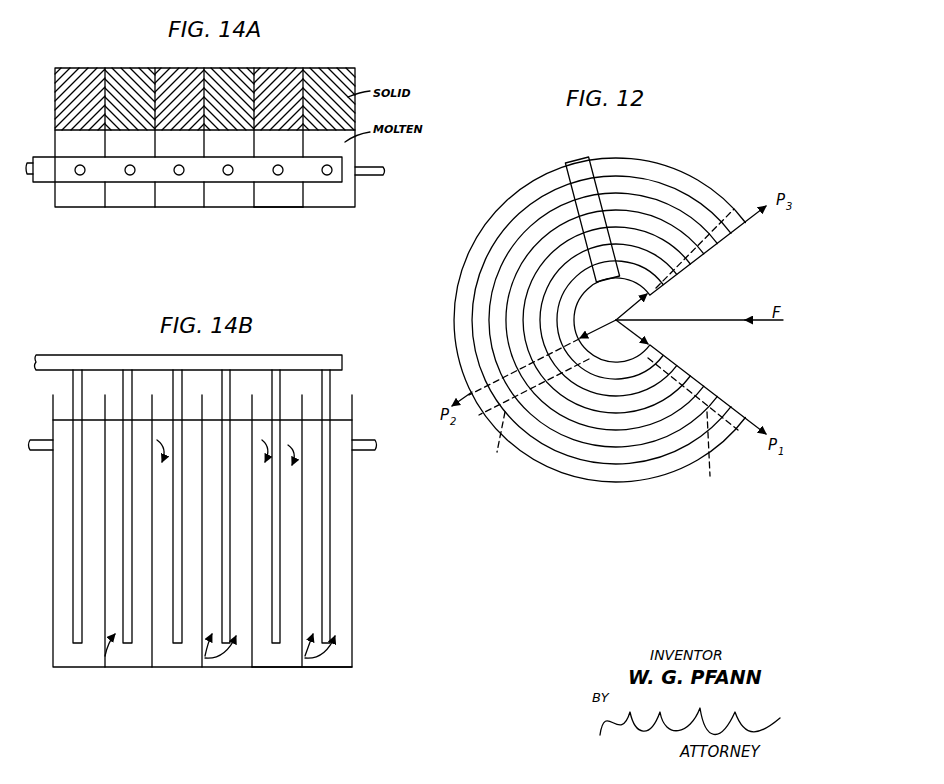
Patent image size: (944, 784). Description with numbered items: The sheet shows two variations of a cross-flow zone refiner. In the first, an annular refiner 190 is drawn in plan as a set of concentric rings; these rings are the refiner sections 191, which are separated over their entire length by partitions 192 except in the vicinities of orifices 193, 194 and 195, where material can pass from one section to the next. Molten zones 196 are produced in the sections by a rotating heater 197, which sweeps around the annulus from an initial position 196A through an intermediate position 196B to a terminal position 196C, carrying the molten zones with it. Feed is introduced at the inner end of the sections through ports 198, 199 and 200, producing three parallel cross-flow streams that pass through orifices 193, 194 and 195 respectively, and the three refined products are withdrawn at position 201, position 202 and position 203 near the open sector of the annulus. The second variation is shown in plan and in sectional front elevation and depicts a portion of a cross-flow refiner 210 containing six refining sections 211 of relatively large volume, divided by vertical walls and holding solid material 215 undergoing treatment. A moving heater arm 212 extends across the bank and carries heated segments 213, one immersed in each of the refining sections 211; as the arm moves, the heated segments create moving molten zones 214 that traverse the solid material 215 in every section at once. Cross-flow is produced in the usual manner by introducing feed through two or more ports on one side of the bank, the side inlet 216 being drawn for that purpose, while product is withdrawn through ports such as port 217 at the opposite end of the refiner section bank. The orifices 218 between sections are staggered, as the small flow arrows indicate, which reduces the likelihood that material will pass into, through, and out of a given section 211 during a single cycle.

In FIG. 12, the refiner 190 is at (722, 193).
In FIG. 12, the refiner sections 191 is at (730, 253).
In FIG. 12, the partitions 192 is at (683, 207).
In FIG. 12, the orifice 193 is at (698, 383).
In FIG. 12, the orifice 194 is at (517, 360).
In FIG. 12, the orifice 195 is at (688, 274).
In FIG. 12, the molten zones 196 is at (597, 217).
In FIG. 12, the initial position 196A is at (748, 413).
In FIG. 12, the intermediate position 196B is at (480, 408).
In FIG. 12, the terminal position 196C is at (757, 229).
In FIG. 12, the rotating heater 197 is at (565, 189).
In FIG. 12, the port 198 is at (648, 343).
In FIG. 12, the port 199 is at (586, 336).
In FIG. 12, the port 200 is at (648, 294).
In FIG. 12, the position 201 is at (746, 428).
In FIG. 12, the position 202 is at (472, 390).
In FIG. 12, the position 203 is at (754, 223).
In FIG. 14A, the cross-flow refiner 210 is at (56, 135).
In FIG. 14B, the cross-flow refiner 210 is at (352, 518).
In FIG. 14A, the refining sections 211 is at (208, 199).
In FIG. 14B, the refining sections 211 is at (315, 660).
In FIG. 14A, the moving heater arm 212 is at (58, 165).
In FIG. 14B, the moving heater arm 212 is at (337, 360).
In FIG. 14A, the heated segments 213 is at (128, 175).
In FIG. 14B, the heated segments 213 is at (278, 582).
In FIG. 14A, the molten zones 214 is at (312, 199).
In FIG. 14B, the molten zones 214 is at (293, 540).
In FIG. 14A, the solid material 215 is at (325, 82).
In FIG. 14B, the inlet 216 is at (53, 438).
In FIG. 14B, the port 217 is at (353, 440).
In FIG. 14B, the orifices 218 is at (157, 445).